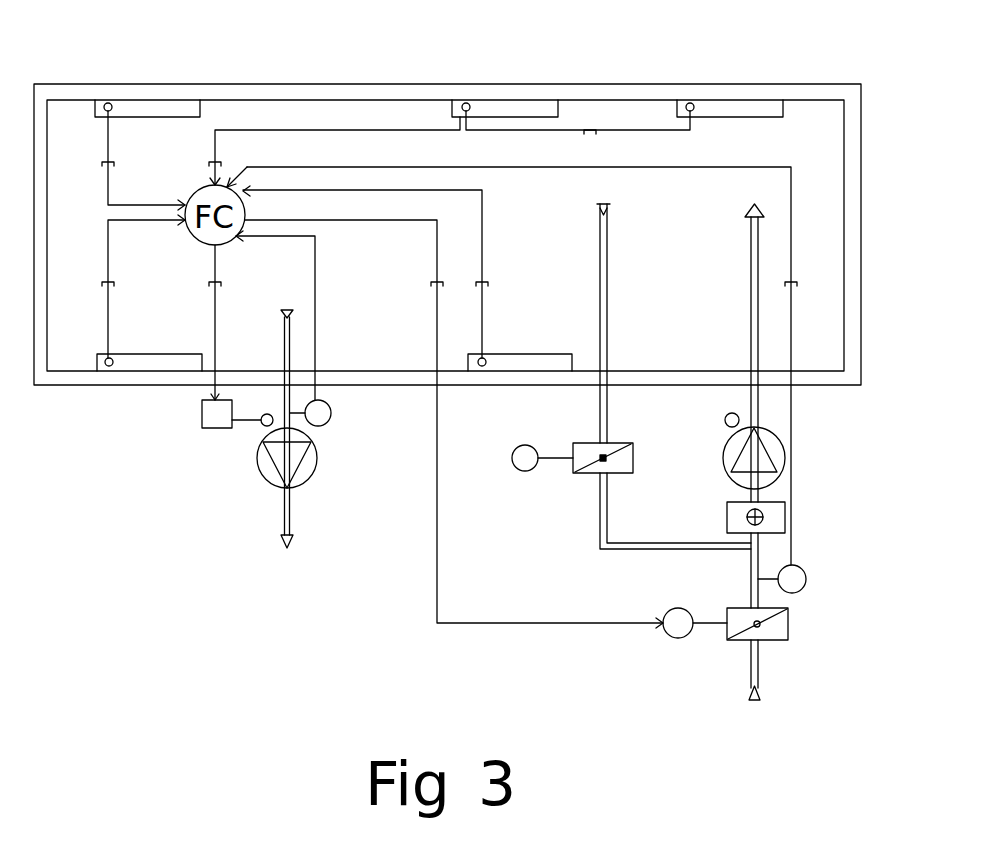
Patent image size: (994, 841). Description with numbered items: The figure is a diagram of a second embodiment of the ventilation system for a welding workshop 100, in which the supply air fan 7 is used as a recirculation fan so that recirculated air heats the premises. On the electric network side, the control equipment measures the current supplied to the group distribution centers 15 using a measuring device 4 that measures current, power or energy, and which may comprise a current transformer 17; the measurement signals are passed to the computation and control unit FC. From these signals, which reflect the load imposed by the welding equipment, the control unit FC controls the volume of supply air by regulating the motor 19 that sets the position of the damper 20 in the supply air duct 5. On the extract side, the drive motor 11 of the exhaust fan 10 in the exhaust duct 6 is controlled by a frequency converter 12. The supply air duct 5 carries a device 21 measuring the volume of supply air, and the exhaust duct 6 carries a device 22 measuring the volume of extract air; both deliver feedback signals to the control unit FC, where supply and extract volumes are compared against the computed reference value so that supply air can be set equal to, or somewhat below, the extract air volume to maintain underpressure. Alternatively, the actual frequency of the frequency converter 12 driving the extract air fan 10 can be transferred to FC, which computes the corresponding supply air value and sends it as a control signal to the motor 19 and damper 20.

The welding workshop 100 is at (287, 110).
The group distribution center 15 is at (147, 110).
The current transformer 17 is at (106, 104).
The measuring device 4 is at (109, 104).
The frequency converter 12 is at (202, 422).
The drive motor 11 is at (262, 428).
The exhaust fan 10 is at (312, 463).
The exhaust duct 6 is at (283, 524).
The device measuring the volume of extract air 22 is at (331, 413).
The supply air fan 7 is at (785, 458).
The device measuring the volume of supply air 21 is at (806, 579).
The damper 20 is at (788, 630).
The motor 19 is at (672, 637).
The supply air duct 5 is at (760, 677).